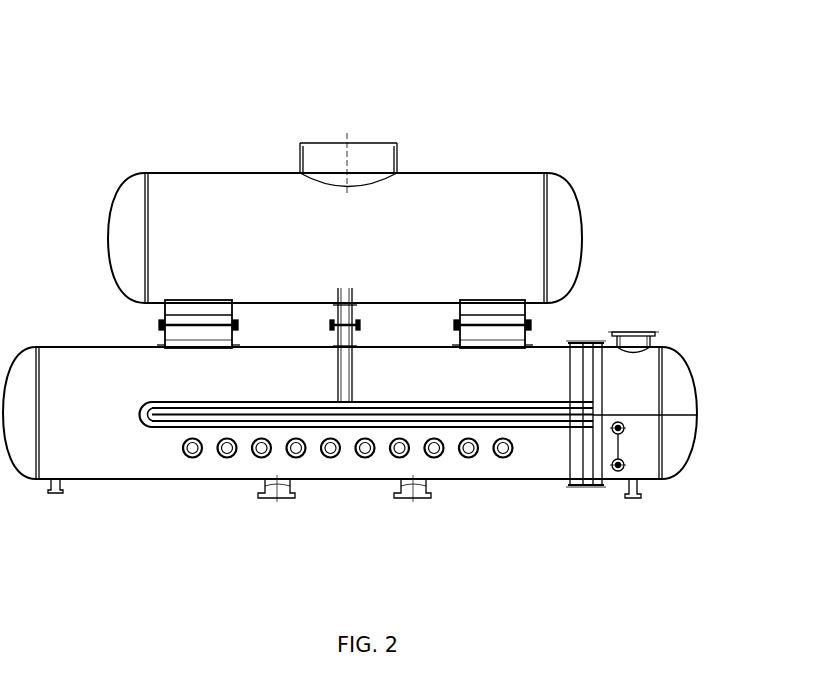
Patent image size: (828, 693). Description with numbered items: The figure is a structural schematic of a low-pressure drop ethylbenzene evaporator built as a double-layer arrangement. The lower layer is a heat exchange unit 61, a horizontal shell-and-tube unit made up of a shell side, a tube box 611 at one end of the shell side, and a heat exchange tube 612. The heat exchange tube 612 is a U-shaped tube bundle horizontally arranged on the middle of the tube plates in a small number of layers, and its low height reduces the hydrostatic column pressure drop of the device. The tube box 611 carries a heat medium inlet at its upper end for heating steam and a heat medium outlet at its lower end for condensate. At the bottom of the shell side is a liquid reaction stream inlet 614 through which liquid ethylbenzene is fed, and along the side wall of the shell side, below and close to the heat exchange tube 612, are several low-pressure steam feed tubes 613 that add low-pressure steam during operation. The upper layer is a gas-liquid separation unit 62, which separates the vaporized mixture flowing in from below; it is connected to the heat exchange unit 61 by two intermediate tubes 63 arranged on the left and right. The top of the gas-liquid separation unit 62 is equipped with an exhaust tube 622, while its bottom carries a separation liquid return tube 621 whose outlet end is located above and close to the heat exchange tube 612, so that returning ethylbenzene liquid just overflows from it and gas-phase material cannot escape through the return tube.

The heat exchange unit 61 is at (80, 362).
The tube box 611 is at (648, 377).
The heat exchange tube 612 is at (160, 428).
The low-pressure steam feed tubes 613 is at (192, 460).
The liquid reaction stream inlet 614 is at (273, 493).
The gas-liquid separation unit 62 is at (465, 195).
The separation liquid return tube 621 is at (333, 303).
The exhaust tube 622 is at (322, 157).
The intermediate tubes 63 is at (495, 308).